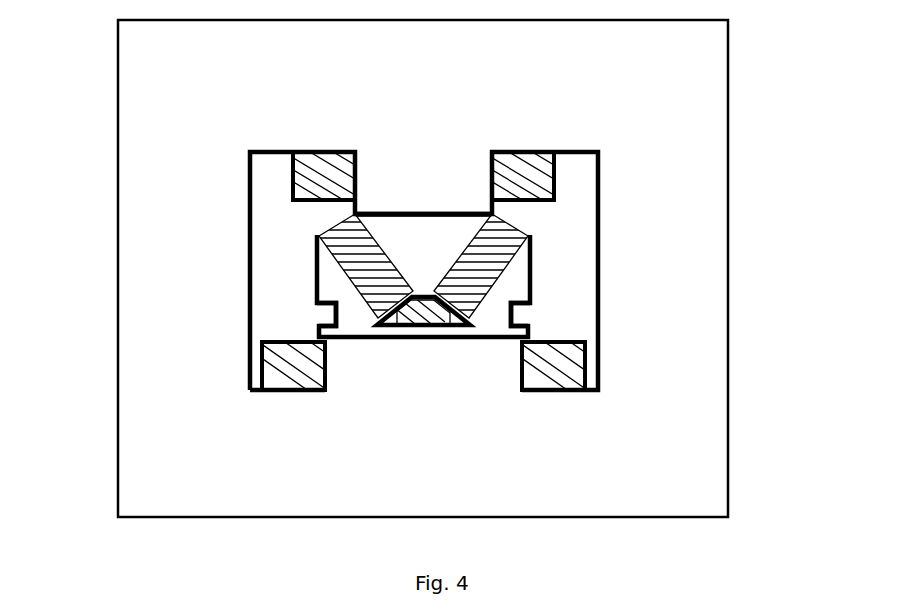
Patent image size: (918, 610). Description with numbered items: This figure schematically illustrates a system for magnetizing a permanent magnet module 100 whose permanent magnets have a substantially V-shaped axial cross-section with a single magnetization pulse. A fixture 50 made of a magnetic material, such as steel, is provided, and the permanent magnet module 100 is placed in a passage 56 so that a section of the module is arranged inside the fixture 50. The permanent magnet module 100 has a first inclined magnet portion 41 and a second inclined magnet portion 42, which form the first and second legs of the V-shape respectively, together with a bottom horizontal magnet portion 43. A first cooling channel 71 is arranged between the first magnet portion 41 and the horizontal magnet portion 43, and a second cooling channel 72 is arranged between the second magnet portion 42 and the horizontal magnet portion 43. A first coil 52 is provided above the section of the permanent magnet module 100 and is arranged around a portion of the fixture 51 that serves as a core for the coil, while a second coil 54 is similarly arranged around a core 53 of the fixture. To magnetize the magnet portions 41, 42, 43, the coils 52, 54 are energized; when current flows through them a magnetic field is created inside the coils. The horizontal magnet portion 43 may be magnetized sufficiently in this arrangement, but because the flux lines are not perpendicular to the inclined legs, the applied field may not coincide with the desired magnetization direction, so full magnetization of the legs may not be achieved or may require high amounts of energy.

The fixture 50 is at (785, 143).
The portion of the fixture 51 is at (466, 162).
The first coil 52 is at (324, 140).
The core 53 is at (503, 361).
The second coil 54 is at (334, 399).
The passage 56 is at (573, 218).
The first inclined magnet portion 41 is at (512, 243).
The second inclined magnet portion 42 is at (345, 240).
The horizontal magnet portion 43 is at (427, 328).
The first cooling channel 71 is at (512, 311).
The second cooling channel 72 is at (345, 308).
The permanent magnet module 100 is at (418, 232).